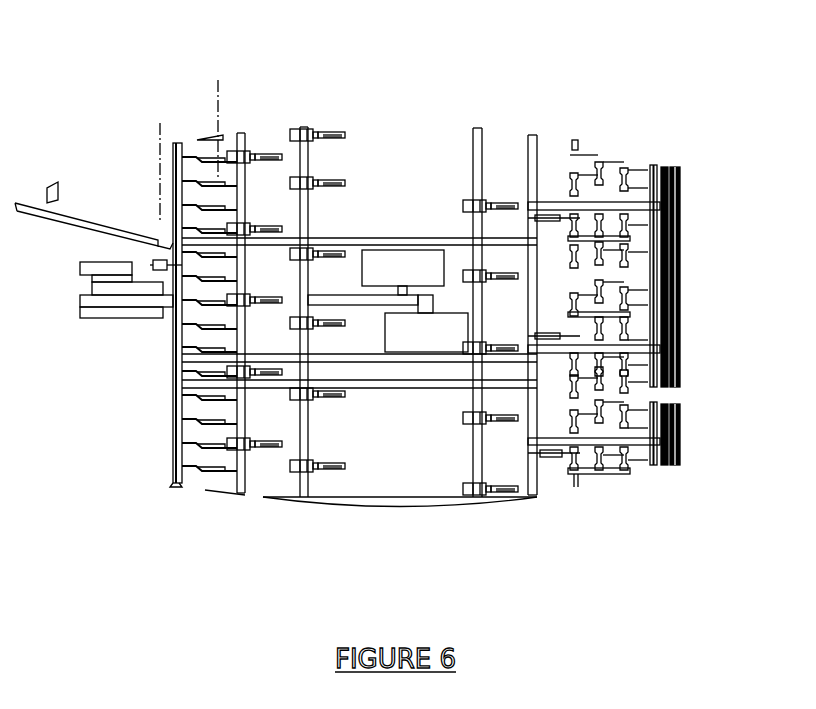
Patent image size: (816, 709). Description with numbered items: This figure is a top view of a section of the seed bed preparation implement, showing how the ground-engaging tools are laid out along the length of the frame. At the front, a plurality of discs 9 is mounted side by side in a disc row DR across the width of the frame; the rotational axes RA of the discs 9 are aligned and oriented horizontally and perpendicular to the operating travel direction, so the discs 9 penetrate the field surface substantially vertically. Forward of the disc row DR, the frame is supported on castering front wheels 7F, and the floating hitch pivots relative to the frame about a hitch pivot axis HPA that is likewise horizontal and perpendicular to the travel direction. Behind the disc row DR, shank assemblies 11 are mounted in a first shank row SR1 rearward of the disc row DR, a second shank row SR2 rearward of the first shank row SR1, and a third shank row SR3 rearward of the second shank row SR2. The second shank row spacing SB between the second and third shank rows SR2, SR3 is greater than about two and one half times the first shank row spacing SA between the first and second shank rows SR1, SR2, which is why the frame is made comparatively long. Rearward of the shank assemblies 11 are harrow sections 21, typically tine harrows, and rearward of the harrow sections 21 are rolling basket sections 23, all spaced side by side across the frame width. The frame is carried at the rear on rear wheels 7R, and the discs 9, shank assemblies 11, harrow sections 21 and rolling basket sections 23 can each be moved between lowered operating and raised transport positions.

The rotational axes RA is at (217, 112).
The hitch pivot axis HPA is at (157, 153).
The discs 9 is at (228, 203).
The shank assemblies 11 is at (310, 130).
The rear wheels 7R is at (407, 257).
The castering front wheels 7F is at (107, 320).
The disc row DR is at (182, 483).
The rolling basket sections 23 is at (680, 413).
The harrow sections 21 is at (608, 478).
The first shank row SR1 is at (241, 493).
The second shank row SR2 is at (305, 497).
The third shank row SR3 is at (478, 497).
The first shank row spacing SA is at (305, 552).
The second shank row spacing SB is at (478, 552).